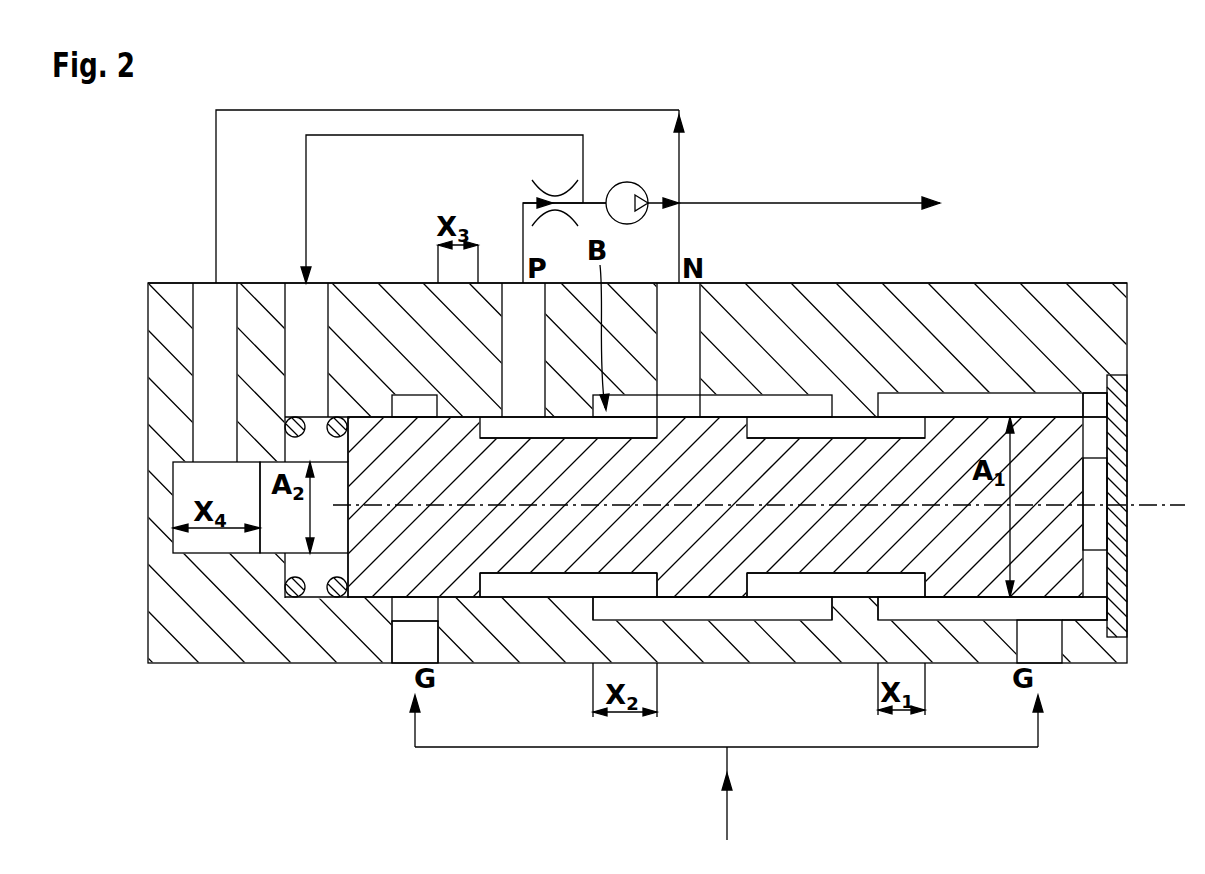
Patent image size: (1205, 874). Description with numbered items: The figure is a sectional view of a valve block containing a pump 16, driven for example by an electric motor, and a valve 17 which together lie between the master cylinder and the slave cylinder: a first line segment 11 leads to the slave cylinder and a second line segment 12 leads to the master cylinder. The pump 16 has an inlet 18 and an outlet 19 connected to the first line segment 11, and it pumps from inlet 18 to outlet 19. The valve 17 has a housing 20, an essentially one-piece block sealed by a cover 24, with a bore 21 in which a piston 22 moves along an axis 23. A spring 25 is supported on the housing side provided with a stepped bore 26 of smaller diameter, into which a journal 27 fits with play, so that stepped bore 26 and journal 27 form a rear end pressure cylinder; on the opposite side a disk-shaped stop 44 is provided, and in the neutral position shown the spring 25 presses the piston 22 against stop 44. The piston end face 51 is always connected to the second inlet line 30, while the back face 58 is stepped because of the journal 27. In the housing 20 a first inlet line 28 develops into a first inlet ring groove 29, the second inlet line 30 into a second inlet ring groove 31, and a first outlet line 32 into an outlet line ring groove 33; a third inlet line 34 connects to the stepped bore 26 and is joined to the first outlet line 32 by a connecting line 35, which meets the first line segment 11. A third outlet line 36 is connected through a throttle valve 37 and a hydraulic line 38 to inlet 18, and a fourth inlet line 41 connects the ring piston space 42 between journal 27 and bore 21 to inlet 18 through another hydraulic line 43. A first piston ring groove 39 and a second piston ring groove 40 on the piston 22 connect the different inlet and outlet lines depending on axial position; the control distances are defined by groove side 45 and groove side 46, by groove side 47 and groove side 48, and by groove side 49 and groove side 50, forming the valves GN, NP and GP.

The first line segment 11 is at (890, 200).
The second line segment 12 is at (727, 826).
The pump 16 is at (633, 172).
The valve 17 is at (1085, 280).
The inlet 18 is at (598, 195).
The outlet 19 is at (676, 160).
The housing 20 is at (1108, 317).
The bore 21 is at (1093, 604).
The piston 22 is at (1060, 435).
The axis 23 is at (1168, 502).
The cover 24 is at (1112, 392).
The spring 25 is at (297, 560).
The stepped bore 26 is at (190, 480).
The journal 27 is at (275, 537).
The first inlet line 28 is at (402, 655).
The first inlet ring groove 29 is at (400, 405).
The second inlet line 30 is at (1045, 648).
The second inlet ring groove 31 is at (1052, 403).
The first outlet line 32 is at (695, 327).
The outlet line ring groove 33 is at (805, 405).
The third inlet line 34 is at (212, 318).
The connecting line 35 is at (430, 111).
The third outlet line 36 is at (508, 305).
The throttle valve 37 is at (554, 190).
The hydraulic line 38 is at (518, 195).
The first piston ring groove 39 is at (530, 590).
The second piston ring groove 40 is at (895, 427).
The fourth inlet line 41 is at (300, 318).
The ring piston space 42 is at (318, 442).
The hydraulic line 43 is at (383, 135).
The stop 44 is at (1093, 537).
The groove side 45 is at (950, 587).
The groove side 46 is at (875, 607).
The groove side 47 is at (660, 582).
The groove side 48 is at (575, 605).
The groove side 49 is at (498, 587).
The groove side 50 is at (455, 640).
The end face 51 is at (1083, 578).
The back face 58 is at (328, 594).